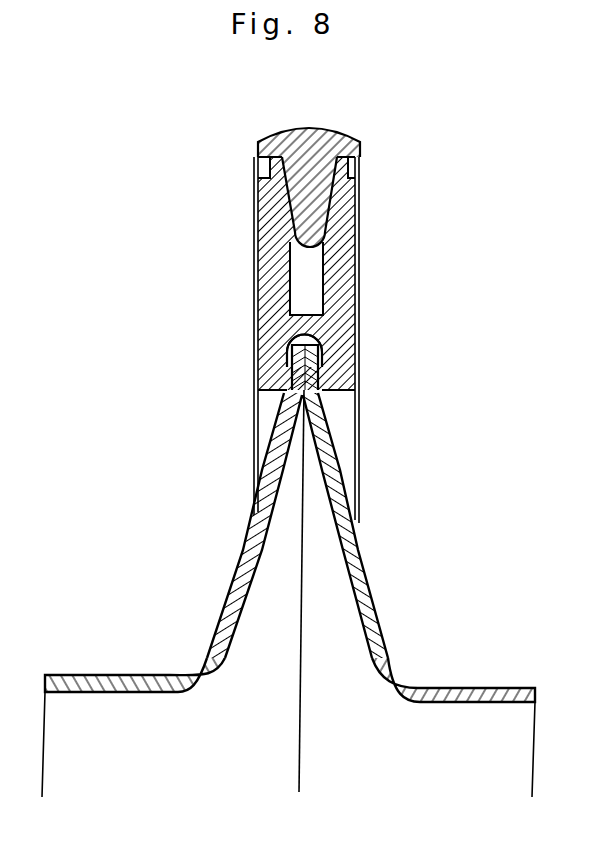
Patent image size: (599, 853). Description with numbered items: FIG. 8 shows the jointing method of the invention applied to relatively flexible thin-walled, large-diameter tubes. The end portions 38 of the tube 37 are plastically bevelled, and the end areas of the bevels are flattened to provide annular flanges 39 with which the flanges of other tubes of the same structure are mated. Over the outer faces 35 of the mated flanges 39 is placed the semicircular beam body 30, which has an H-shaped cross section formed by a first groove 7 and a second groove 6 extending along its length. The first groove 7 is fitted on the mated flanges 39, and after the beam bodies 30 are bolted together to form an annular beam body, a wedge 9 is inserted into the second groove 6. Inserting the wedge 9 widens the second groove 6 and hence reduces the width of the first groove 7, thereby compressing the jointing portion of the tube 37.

The wedge 9 is at (333, 134).
The second groove 6 is at (310, 268).
The semicircular beam body 30 is at (338, 300).
The first groove 7 is at (294, 336).
The outer face of flange 35 is at (323, 357).
The annular flange 39 is at (308, 379).
The end portion of tube 38 is at (353, 566).
The tube 37 is at (492, 688).